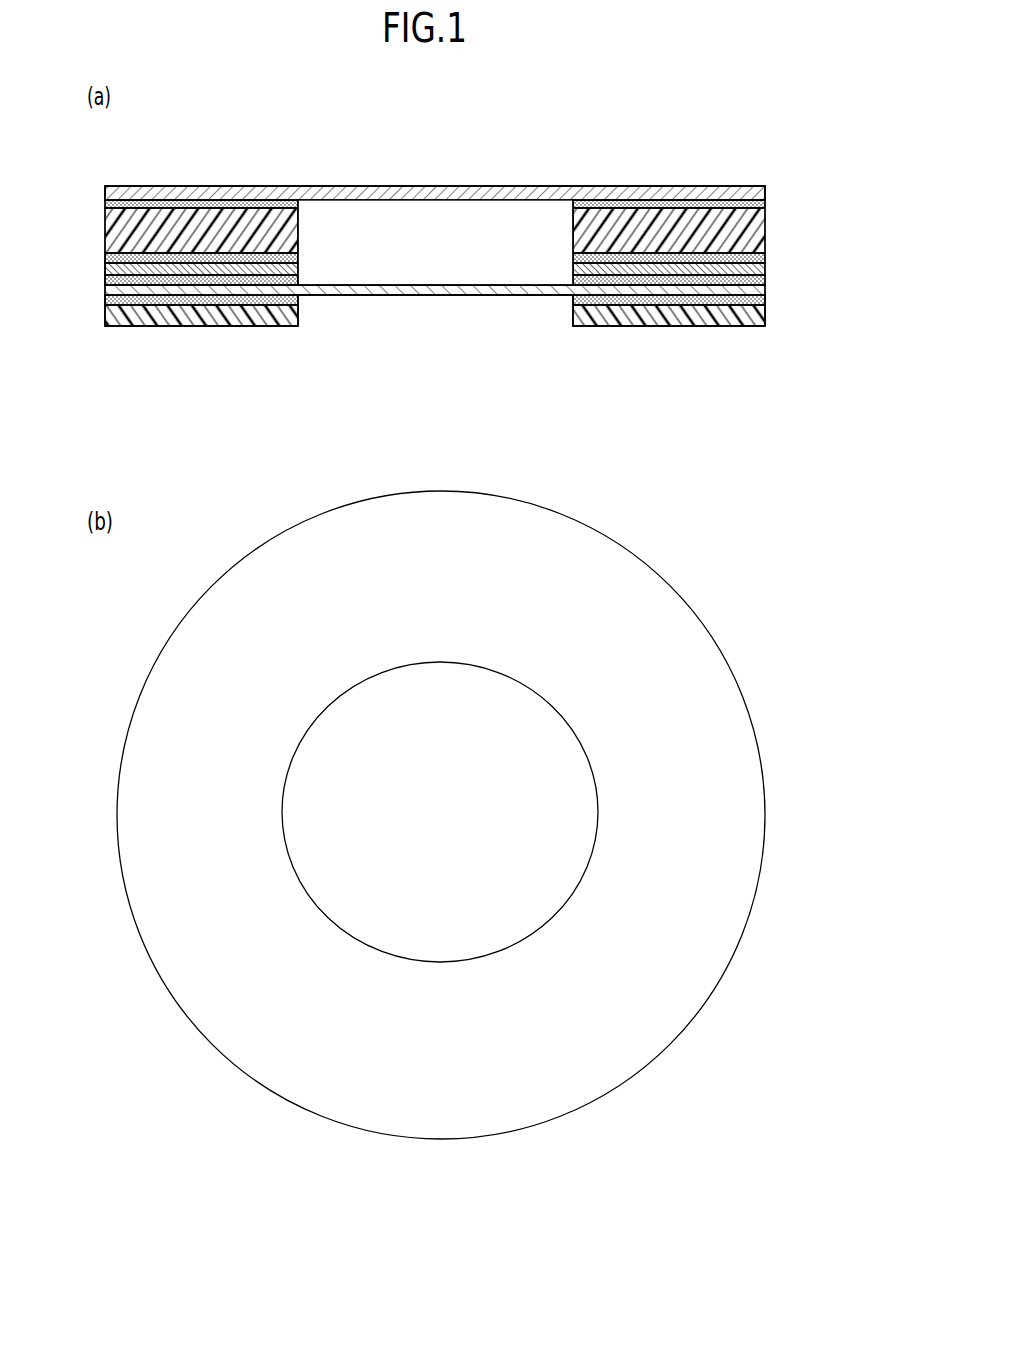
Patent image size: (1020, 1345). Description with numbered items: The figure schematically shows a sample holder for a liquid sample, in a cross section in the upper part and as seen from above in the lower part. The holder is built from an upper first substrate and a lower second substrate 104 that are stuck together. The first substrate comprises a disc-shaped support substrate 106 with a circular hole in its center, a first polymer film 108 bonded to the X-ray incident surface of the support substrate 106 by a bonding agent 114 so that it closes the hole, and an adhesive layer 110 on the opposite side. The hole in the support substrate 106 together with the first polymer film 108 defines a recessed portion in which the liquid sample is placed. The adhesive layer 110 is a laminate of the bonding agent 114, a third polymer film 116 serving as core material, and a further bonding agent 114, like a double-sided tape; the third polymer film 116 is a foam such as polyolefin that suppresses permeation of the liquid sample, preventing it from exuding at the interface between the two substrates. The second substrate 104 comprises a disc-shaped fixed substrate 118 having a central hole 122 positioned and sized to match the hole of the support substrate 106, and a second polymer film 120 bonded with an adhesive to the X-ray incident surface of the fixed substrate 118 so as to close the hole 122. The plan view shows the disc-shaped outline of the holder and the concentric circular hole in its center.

The second substrate 104 is at (768, 285).
The support substrate 106 is at (110, 226).
The first polymer film 108 is at (132, 190).
The adhesive layer 110 is at (302, 255).
The bonding agent 114 is at (105, 204).
The third polymer film 116 is at (105, 269).
The fixed substrate 118 is at (125, 318).
The second polymer film 120 is at (105, 291).
The hole 122 is at (402, 301).